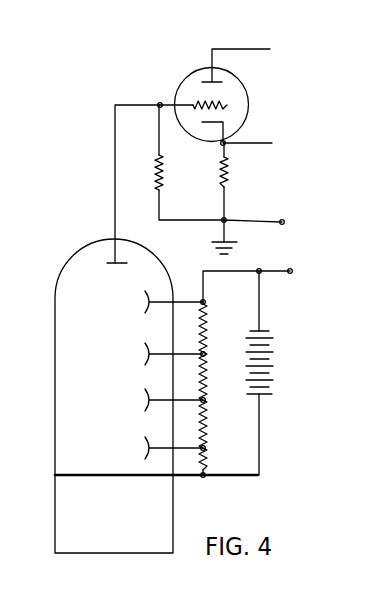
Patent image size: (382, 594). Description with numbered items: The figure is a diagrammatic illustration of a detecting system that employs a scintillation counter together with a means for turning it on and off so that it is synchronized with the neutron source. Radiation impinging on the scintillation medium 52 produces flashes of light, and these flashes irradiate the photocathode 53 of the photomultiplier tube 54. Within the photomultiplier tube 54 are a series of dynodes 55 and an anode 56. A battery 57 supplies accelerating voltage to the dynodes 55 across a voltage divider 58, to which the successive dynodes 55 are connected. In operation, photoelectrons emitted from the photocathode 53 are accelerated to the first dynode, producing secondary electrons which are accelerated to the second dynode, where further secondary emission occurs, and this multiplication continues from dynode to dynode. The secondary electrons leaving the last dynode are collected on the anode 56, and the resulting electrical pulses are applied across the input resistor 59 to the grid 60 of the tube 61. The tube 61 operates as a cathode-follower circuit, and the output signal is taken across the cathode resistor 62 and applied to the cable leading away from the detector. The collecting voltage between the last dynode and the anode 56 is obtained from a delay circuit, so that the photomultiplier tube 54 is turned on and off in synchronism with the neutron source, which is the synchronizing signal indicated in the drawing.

The scintillation medium 52 is at (62, 527).
The photocathode 53 is at (62, 474).
The photomultiplier tube 54 is at (55, 368).
The dynodes 55 is at (146, 398).
The anode 56 is at (108, 260).
The battery 57 is at (271, 343).
The voltage divider 58 is at (207, 433).
The input resistor 59 is at (156, 166).
The grid 60 is at (223, 100).
The tube 61 is at (190, 70).
The cathode resistor 62 is at (230, 166).